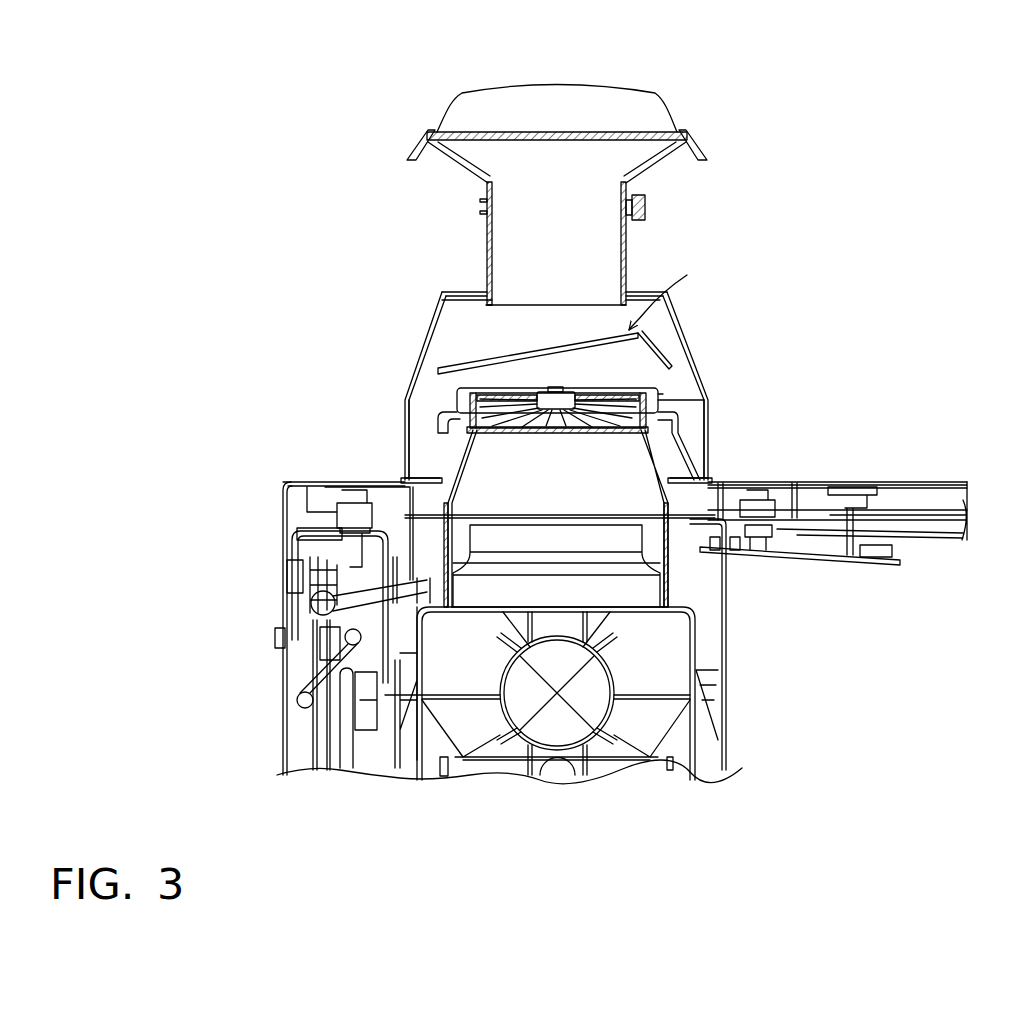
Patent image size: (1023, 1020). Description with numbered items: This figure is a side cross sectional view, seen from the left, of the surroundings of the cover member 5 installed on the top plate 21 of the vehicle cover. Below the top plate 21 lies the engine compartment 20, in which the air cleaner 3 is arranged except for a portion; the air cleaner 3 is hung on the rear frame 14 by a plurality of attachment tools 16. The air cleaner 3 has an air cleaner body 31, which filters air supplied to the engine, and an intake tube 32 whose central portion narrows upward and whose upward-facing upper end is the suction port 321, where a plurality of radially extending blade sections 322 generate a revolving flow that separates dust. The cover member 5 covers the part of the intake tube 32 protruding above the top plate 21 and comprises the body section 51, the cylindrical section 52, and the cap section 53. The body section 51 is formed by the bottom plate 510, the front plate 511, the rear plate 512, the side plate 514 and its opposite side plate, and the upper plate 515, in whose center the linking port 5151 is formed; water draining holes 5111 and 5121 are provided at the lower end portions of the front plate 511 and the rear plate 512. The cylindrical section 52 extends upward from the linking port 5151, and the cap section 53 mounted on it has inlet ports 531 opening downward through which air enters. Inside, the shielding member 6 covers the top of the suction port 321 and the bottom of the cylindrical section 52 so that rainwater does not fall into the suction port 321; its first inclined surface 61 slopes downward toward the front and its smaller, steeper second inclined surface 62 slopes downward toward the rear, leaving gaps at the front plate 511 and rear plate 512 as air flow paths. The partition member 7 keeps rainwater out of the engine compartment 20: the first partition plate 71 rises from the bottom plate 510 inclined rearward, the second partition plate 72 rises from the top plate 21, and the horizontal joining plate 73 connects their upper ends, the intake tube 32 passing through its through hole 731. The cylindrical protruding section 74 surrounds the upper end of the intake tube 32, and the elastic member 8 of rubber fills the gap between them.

The cap section 53 is at (468, 98).
The inlet port 531 is at (474, 170).
The cylindrical section 52 is at (486, 252).
The cover member 5 is at (717, 406).
The body section 51 is at (403, 382).
The front plate 511 is at (410, 365).
The rear plate 512 is at (695, 366).
The side plate 514 is at (660, 318).
The upper plate 515 is at (476, 290).
The linking port 5151 is at (490, 318).
The water draining hole 5111 is at (407, 472).
The water draining hole 5121 is at (712, 470).
The first inclined surface 61 is at (487, 346).
The second inclined surface 62 is at (655, 360).
The shielding member 6 is at (687, 275).
The partition member 7 is at (687, 428).
The elastic member 8 is at (660, 392).
The joining plate 73 is at (442, 412).
The through hole 731 is at (420, 428).
The protruding section 74 is at (440, 396).
The second partition plate 72 is at (686, 449).
The first partition plate 71 is at (442, 450).
The suction port 321 is at (490, 430).
The blade section 322 is at (590, 420).
The intake tube 32 is at (698, 566).
The air cleaner body 31 is at (697, 650).
The attachment tool 16 is at (355, 558).
The bottom plate 510 is at (345, 482).
The top plate 21 is at (935, 487).
The rear frame 14 is at (935, 545).
The engine compartment 20 is at (770, 738).
The air cleaner 3 is at (678, 778).